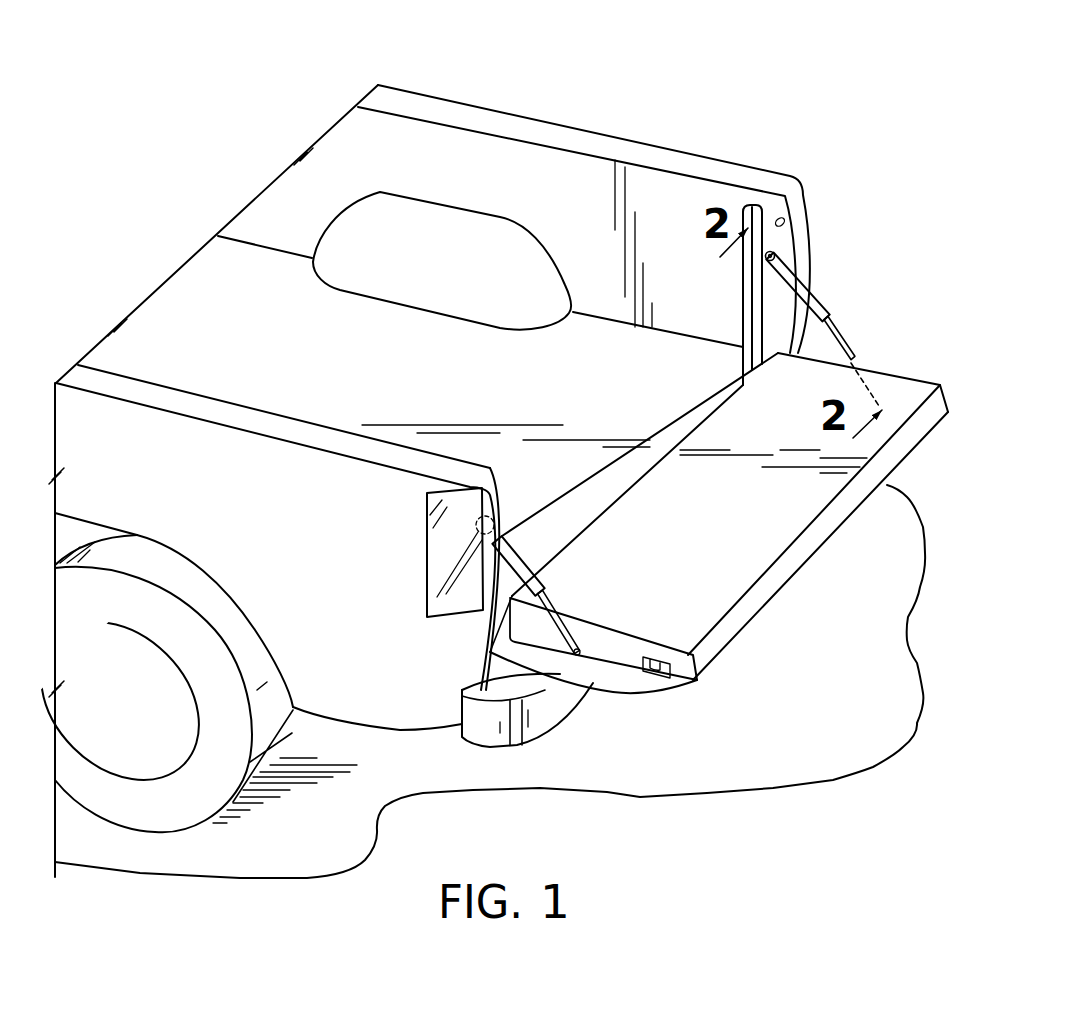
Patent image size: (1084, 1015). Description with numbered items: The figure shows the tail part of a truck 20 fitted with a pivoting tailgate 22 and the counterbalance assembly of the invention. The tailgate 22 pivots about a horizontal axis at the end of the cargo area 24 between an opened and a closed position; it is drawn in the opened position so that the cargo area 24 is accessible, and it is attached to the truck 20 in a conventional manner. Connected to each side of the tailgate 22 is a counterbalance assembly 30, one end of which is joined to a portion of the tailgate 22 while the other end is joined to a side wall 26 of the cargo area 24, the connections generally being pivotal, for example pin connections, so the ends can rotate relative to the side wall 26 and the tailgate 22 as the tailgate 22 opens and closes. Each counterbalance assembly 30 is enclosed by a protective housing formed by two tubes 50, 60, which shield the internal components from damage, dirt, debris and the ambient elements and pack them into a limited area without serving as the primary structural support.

The truck 20 is at (528, 102).
The tailgate 22 is at (730, 575).
The cargo area 24 is at (184, 324).
The bed sidewall post 26 is at (773, 202).
The counterbalance assembly 30 is at (838, 293).
The tube 50 is at (812, 275).
The tube 60 is at (848, 345).